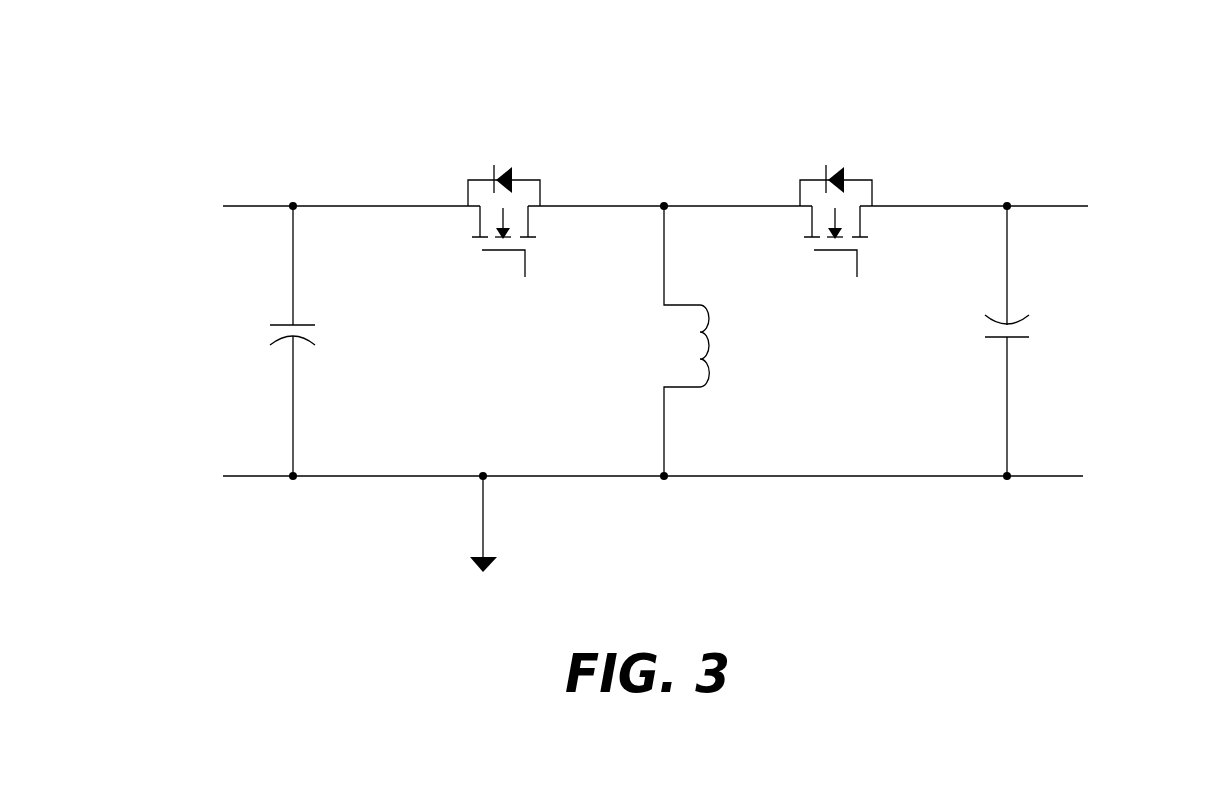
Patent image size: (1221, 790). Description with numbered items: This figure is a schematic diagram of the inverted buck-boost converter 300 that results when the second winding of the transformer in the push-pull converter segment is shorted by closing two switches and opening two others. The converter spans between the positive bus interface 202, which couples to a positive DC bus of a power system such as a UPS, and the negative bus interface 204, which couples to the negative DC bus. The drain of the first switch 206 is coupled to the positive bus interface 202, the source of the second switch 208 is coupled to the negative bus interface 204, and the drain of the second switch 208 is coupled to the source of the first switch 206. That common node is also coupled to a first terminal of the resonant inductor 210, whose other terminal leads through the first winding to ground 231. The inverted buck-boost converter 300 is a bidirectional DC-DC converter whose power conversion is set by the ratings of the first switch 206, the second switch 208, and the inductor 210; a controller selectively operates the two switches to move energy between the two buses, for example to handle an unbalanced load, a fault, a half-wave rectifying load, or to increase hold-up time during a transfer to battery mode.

The inverted buck-boost converter 300 is at (653, 328).
The positive bus interface 202 is at (238, 206).
The negative bus interface 204 is at (1067, 206).
The first switch 206 is at (498, 250).
The second switch 208 is at (830, 250).
The resonant inductor 210 is at (702, 387).
The ground 231 is at (490, 565).